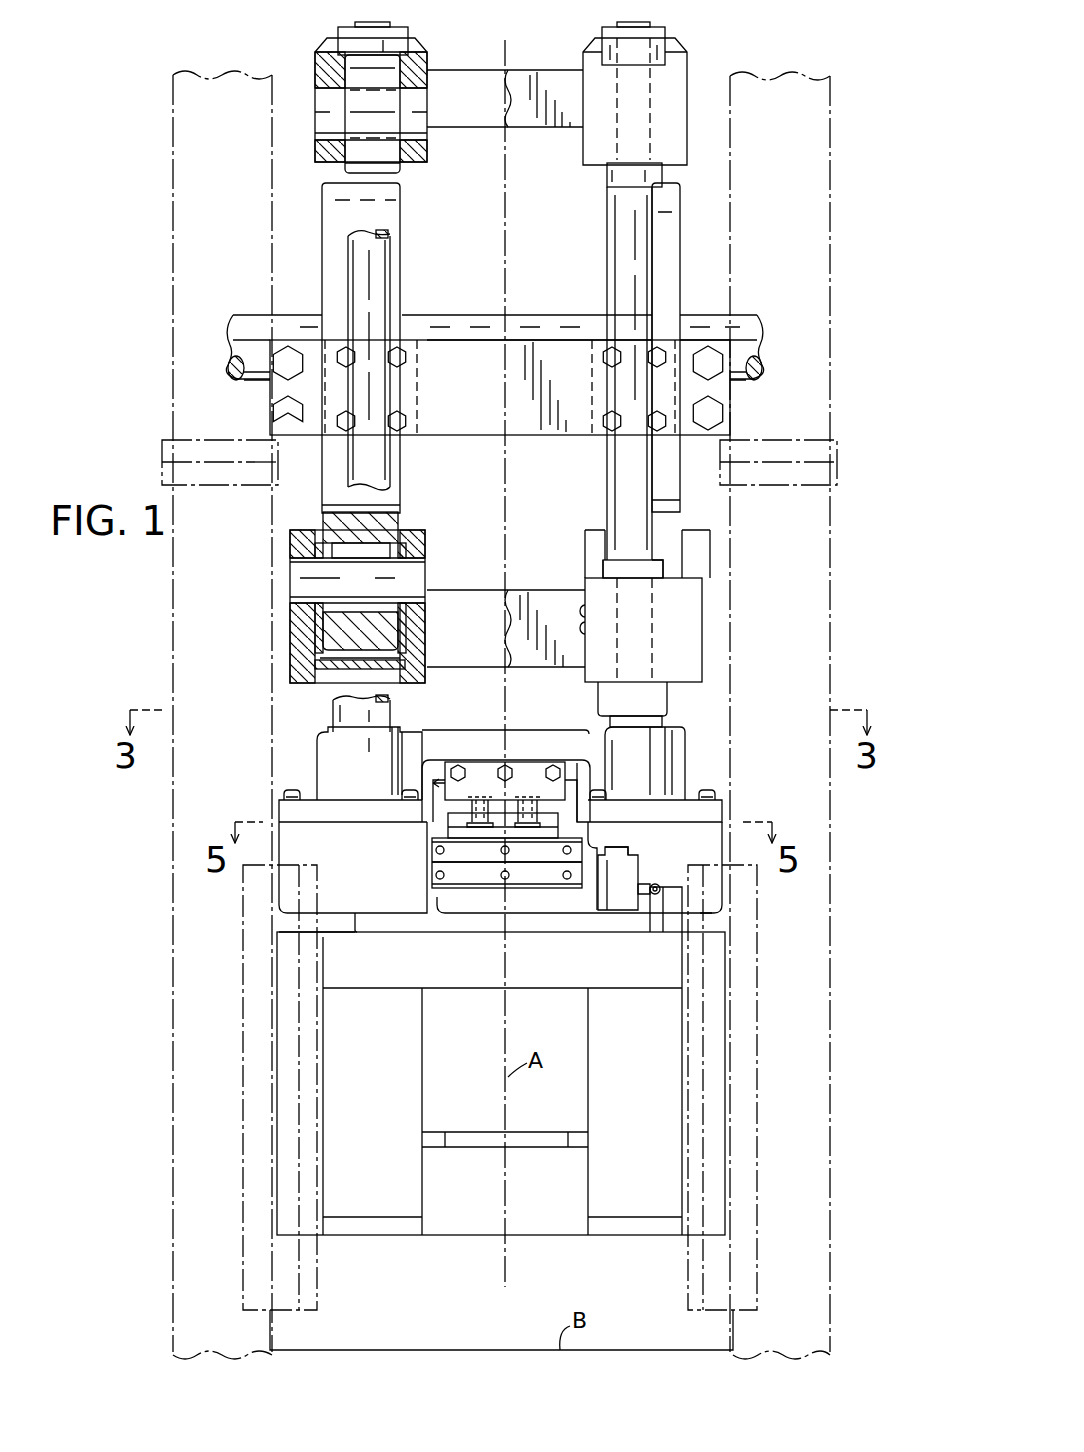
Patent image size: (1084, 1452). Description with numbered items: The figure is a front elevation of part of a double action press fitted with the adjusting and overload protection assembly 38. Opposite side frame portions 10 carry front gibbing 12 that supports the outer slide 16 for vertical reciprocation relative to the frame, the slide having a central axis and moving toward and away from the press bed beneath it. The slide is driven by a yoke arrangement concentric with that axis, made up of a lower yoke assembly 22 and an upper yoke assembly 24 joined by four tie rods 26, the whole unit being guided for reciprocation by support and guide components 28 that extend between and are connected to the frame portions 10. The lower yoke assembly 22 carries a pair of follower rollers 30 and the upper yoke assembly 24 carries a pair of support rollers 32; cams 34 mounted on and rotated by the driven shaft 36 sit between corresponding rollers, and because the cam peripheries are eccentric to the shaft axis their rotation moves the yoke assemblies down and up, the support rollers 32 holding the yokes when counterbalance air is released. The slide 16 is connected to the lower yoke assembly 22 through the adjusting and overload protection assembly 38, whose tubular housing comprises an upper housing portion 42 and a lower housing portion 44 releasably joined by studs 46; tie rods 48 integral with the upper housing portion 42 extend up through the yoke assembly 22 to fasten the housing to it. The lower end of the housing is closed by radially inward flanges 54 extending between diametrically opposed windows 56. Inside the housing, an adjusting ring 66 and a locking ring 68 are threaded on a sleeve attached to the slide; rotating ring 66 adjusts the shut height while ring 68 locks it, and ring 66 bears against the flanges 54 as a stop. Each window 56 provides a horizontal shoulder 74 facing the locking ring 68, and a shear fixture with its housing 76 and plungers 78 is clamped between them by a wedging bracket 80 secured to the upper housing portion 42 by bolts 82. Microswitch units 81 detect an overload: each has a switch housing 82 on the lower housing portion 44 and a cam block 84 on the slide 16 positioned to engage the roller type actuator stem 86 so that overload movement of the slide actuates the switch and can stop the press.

The side frame portions 10 is at (160, 185).
The front gibbing 12 is at (325, 1250).
The outer slide 16 is at (393, 1200).
The lower yoke assembly 22 is at (710, 628).
The upper yoke assembly 24 is at (697, 88).
The tie rods 26 is at (394, 290).
The support and guide components 28 is at (460, 346).
The follower rollers 30 is at (392, 527).
The support rollers 32 is at (385, 152).
The cams 34 is at (388, 225).
The driven shaft 36 is at (255, 325).
The adjusting and overload protection assembly 38 is at (280, 800).
The upper housing portion 42 is at (532, 742).
The lower housing portion 44 is at (378, 892).
The studs 46 is at (292, 788).
The tie rods 48 is at (335, 714).
The flanges 54 is at (439, 900).
The windows 56 is at (436, 782).
The adjusting ring 66 is at (480, 880).
The locking ring 68 is at (536, 868).
The shoulders 74 is at (572, 779).
The shear fixture housing 76 is at (448, 826).
The plungers 78 is at (490, 808).
The wedging bracket 80 is at (482, 768).
The microswitch units 81 is at (612, 848).
The bolts 82 is at (462, 768).
The cam block 84 is at (668, 926).
The roller type actuator stem 86 is at (656, 884).